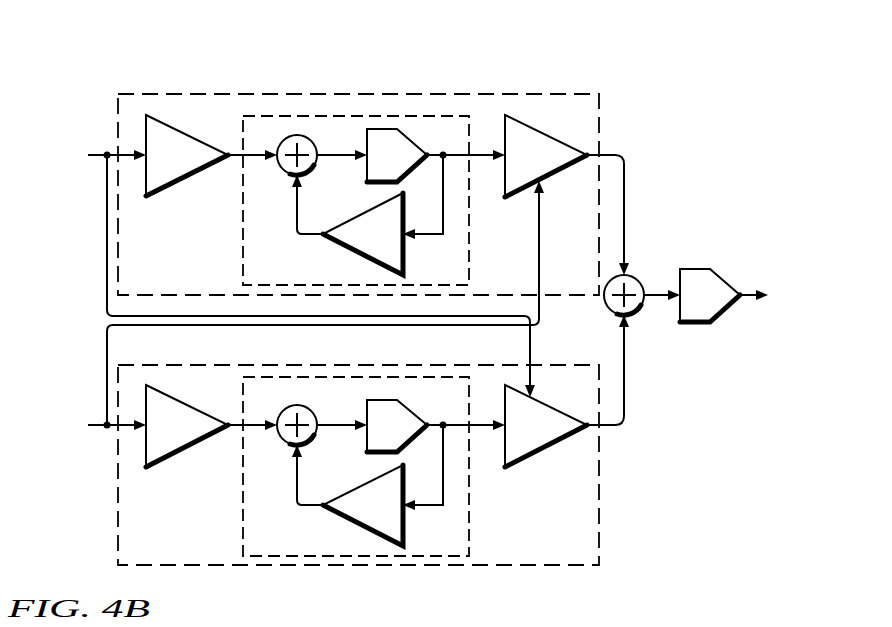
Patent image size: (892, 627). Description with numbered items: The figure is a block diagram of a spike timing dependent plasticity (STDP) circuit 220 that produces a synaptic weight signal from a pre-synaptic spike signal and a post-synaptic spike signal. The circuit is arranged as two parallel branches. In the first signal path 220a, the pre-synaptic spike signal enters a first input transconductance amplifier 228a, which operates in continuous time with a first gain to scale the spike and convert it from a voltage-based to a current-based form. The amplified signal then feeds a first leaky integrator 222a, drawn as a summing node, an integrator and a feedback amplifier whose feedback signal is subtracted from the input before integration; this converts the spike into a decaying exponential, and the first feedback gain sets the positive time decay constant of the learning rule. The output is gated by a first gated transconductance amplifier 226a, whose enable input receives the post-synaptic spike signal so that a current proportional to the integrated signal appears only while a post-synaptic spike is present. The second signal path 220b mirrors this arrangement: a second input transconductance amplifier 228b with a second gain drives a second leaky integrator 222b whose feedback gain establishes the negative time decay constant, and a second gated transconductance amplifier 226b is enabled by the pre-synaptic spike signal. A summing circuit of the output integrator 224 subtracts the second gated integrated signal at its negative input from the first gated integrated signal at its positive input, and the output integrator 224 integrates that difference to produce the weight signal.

The spike timing dependent plasticity (STDP) circuit 220 is at (692, 43).
The first signal path 220a is at (612, 133).
The second signal path 220b is at (612, 527).
The first leaky integrator 222a is at (228, 206).
The second leaky integrator 222b is at (228, 476).
The output integrator 224 is at (690, 269).
The first gated transconductance amplifier 226a is at (537, 130).
The second gated transconductance amplifier 226b is at (533, 447).
The first input transconductance amplifier 228a is at (180, 133).
The second input transconductance amplifier 228b is at (180, 400).